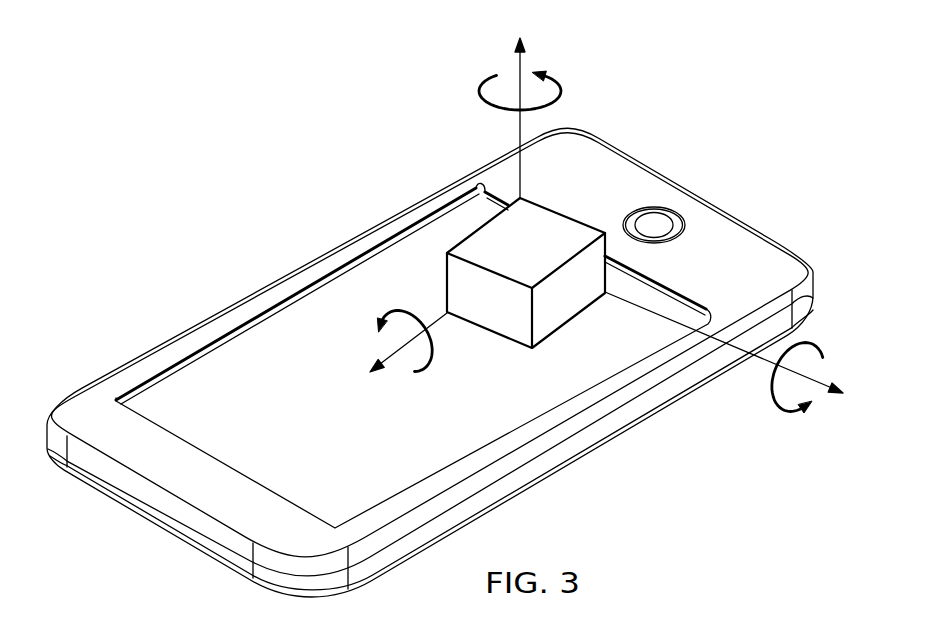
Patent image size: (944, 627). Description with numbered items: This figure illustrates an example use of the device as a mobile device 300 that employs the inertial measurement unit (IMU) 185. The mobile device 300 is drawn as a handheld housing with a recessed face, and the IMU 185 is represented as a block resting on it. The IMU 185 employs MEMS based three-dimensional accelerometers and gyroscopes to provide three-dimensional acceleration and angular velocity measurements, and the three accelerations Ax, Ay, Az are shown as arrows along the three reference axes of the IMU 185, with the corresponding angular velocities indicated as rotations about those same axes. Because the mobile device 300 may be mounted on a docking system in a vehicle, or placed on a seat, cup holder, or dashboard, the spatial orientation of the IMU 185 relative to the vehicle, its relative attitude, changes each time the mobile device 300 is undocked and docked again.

The mobile device 300 is at (279, 273).
The inertial measurement unit (IMU) 185 is at (483, 224).
The acceleration along the x axis Ax is at (397, 338).
The acceleration along the y axis Ay is at (737, 362).
The acceleration along the z axis Az is at (535, 106).